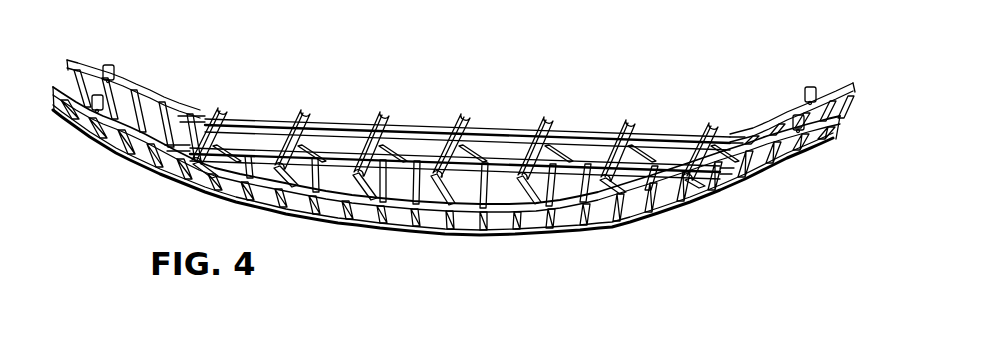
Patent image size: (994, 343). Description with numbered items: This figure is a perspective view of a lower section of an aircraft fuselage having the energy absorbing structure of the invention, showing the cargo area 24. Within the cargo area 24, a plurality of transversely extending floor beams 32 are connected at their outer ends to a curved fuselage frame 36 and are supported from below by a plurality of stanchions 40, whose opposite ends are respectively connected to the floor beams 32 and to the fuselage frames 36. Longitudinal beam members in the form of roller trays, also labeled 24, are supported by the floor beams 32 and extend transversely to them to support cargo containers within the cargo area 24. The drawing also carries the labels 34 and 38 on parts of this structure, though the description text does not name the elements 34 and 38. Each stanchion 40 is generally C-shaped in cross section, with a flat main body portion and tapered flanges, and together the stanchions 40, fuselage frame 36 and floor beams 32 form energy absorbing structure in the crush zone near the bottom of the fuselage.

The cargo area 24 is at (454, 162).
The floor beams 32 is at (330, 153).
The cross members 34 is at (470, 111).
The fuselage frame 36 is at (785, 129).
The side rail 38 is at (778, 175).
The stanchions 40 is at (276, 186).